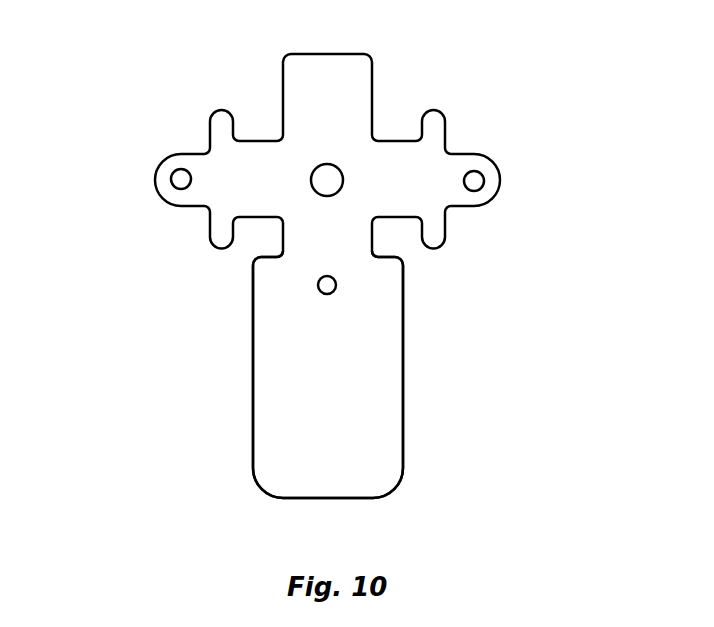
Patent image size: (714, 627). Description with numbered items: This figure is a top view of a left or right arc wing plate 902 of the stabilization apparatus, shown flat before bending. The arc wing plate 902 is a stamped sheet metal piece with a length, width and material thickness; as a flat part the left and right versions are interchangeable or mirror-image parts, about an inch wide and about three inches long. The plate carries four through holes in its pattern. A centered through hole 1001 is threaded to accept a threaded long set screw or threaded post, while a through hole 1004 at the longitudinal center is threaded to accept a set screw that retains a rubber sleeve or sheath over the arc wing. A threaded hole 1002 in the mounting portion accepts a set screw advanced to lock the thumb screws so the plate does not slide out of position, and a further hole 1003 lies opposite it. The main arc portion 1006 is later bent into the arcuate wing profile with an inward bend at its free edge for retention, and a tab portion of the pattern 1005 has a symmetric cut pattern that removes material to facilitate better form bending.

The arc wing plate 902 is at (190, 313).
The centered through hole 1001 is at (327, 164).
The threaded hole 1002 is at (181, 168).
The right lobe opening 1003 is at (485, 181).
The through hole 1004 is at (337, 283).
The tab portion of the pattern 1005 is at (276, 188).
The main arc portion 1006 is at (347, 429).